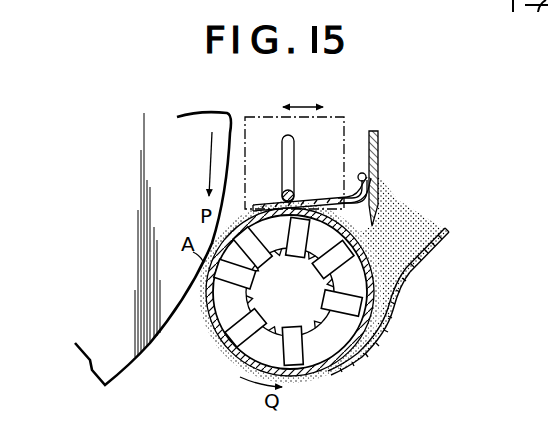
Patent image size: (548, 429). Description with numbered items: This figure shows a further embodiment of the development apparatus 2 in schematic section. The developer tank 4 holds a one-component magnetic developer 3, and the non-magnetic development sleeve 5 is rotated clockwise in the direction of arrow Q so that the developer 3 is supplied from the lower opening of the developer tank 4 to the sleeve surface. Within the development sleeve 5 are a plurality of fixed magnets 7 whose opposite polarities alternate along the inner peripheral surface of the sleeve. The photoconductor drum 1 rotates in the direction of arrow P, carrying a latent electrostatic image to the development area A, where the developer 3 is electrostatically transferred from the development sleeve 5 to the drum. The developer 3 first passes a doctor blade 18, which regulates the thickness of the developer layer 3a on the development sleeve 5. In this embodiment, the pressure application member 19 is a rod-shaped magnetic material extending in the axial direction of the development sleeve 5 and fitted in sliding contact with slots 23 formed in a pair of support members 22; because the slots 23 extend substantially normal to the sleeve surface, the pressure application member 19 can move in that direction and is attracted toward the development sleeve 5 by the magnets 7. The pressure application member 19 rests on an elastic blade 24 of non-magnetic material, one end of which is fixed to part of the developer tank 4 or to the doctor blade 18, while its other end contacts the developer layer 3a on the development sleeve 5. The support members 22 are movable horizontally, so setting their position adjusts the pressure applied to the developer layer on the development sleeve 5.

The photoconductor drum 1 is at (127, 357).
The development apparatus 2 is at (394, 176).
The magnetic developer 3 is at (420, 252).
The developer layer 3a is at (352, 199).
The developer tank 4 is at (397, 324).
The development sleeve 5 is at (306, 374).
The magnets 7 is at (308, 272).
The doctor blade 18 is at (374, 222).
The pressure application member 19 is at (296, 192).
The support members 22 is at (351, 117).
The slots 23 is at (283, 165).
The elastic blade 24 is at (268, 204).